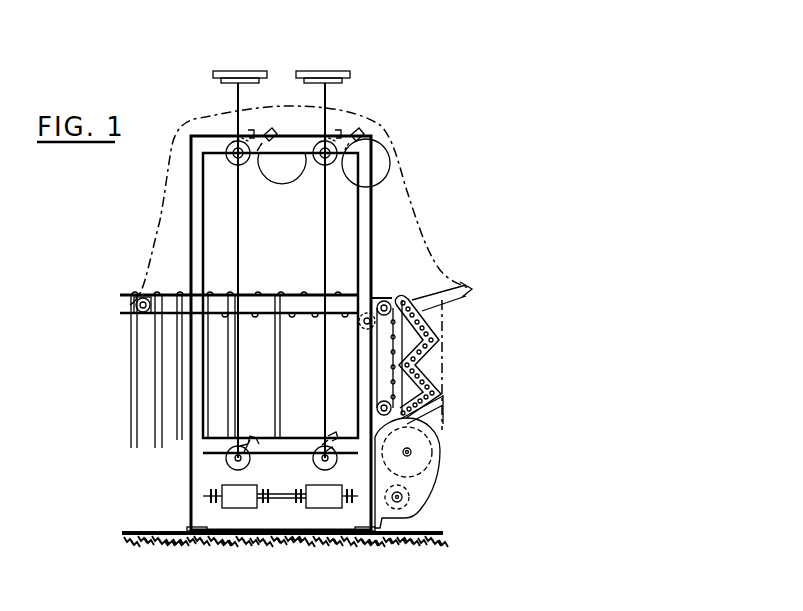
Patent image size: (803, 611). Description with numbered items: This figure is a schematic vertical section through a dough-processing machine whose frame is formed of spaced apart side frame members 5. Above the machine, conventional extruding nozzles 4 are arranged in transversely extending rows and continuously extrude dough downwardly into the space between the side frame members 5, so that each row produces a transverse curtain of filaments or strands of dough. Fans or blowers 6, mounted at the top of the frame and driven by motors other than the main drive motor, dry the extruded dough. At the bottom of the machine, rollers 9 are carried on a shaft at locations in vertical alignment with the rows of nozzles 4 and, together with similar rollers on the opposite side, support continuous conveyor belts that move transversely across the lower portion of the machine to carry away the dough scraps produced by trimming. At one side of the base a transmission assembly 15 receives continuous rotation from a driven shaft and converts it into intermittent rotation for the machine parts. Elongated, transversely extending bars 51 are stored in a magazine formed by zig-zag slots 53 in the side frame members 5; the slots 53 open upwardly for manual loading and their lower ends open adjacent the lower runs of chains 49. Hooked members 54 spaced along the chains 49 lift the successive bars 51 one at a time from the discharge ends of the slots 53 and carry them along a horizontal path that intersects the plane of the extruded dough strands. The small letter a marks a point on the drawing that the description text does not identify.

The nozzle 4 is at (238, 72).
The fan or blower 6 is at (268, 136).
The side frame member 5 is at (170, 247).
The clip a is at (322, 445).
The roller 9 is at (244, 500).
The chain 49 is at (398, 296).
The hooked member 54 is at (395, 377).
The bar 51 is at (432, 345).
The zig-zag slot 53 is at (420, 304).
The transmission assembly 15 is at (437, 470).